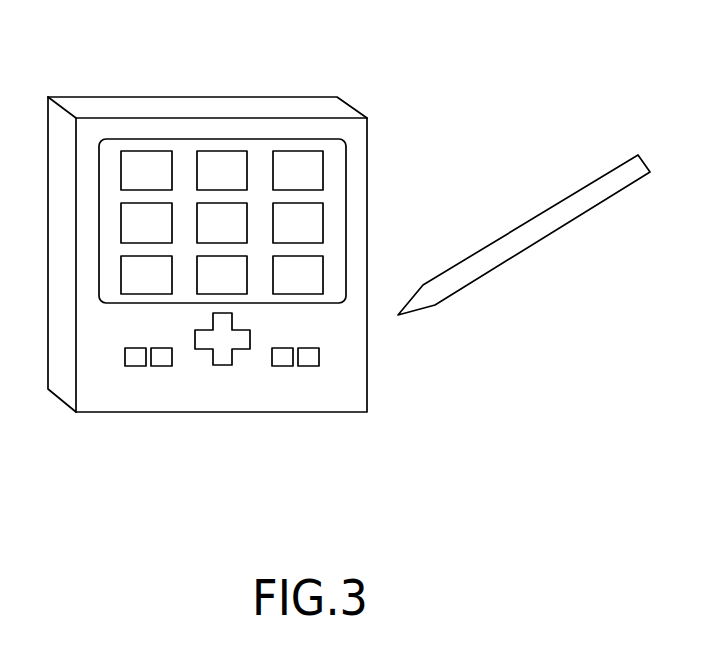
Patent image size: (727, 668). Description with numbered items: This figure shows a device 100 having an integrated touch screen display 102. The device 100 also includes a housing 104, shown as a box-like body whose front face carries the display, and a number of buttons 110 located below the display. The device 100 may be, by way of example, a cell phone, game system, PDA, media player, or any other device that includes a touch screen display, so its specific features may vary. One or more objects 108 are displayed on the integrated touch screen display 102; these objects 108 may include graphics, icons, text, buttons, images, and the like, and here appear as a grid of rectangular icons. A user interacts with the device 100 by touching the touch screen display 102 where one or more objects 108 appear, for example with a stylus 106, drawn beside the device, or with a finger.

The device 100 is at (504, 107).
The integrated touch screen display 102 is at (334, 176).
The housing 104 is at (304, 97).
The stylus 106 is at (537, 238).
The objects 108 is at (323, 218).
The buttons 110 is at (124, 367).